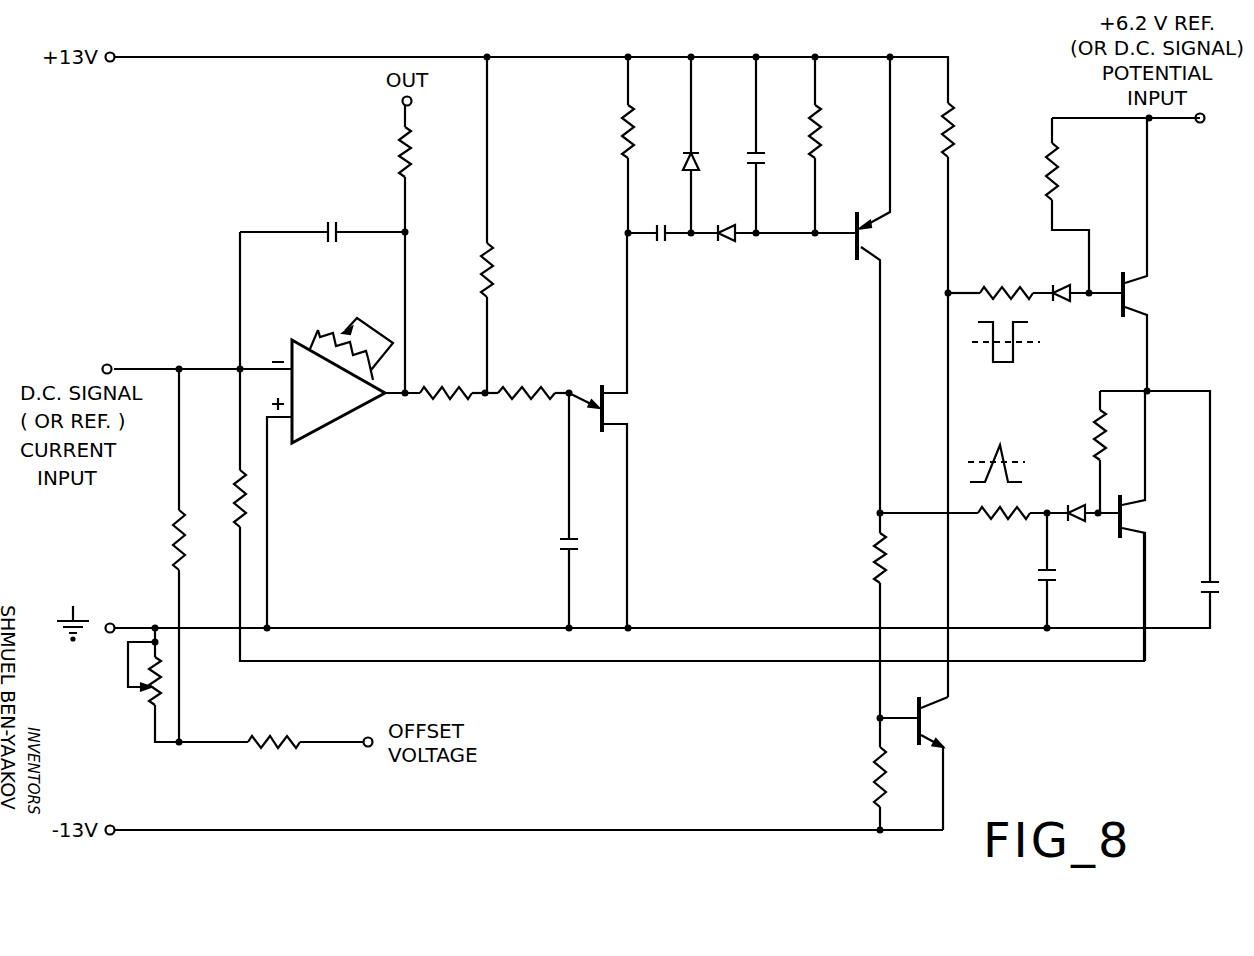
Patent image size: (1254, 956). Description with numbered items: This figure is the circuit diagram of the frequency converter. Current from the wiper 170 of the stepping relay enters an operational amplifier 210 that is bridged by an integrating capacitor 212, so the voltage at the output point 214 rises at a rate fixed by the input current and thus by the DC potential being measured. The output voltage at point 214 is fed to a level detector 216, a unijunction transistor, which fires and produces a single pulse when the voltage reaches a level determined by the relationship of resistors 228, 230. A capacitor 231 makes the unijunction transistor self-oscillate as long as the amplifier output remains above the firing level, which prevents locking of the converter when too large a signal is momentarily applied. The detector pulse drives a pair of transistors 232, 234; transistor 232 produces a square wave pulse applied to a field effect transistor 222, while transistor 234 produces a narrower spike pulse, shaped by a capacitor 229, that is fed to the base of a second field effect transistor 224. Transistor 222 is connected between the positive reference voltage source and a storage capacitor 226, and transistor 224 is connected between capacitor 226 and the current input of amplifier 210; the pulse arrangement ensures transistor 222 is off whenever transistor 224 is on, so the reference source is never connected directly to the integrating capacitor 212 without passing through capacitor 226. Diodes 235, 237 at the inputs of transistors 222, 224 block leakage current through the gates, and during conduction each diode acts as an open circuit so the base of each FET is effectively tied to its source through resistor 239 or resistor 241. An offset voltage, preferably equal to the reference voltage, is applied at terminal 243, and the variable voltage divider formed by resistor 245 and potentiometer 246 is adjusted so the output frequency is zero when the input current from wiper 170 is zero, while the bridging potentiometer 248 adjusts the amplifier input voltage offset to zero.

The wiper 170 is at (112, 363).
The output point 214 is at (400, 106).
The integrating capacitor 212 is at (331, 222).
The bridging potentiometer 248 is at (337, 325).
The operational amplifier 210 is at (340, 424).
The resistor 228 is at (495, 268).
The resistor 230 is at (526, 400).
The level detector 216 is at (607, 405).
The capacitor 231 is at (560, 545).
The transistor 232 is at (868, 235).
The diode 235 is at (1062, 288).
The field effect transistor 222 is at (1120, 307).
The resistor 239 is at (1060, 175).
The resistor 241 is at (1097, 425).
The diode 237 is at (1082, 510).
The field effect transistor 224 is at (1117, 530).
The capacitor 229 is at (1040, 575).
The storage capacitor 226 is at (1197, 590).
The transistor 234 is at (930, 722).
The variable voltage divider 246 is at (149, 694).
The variable voltage divider 245 is at (276, 755).
The offset voltage terminal 243 is at (366, 752).